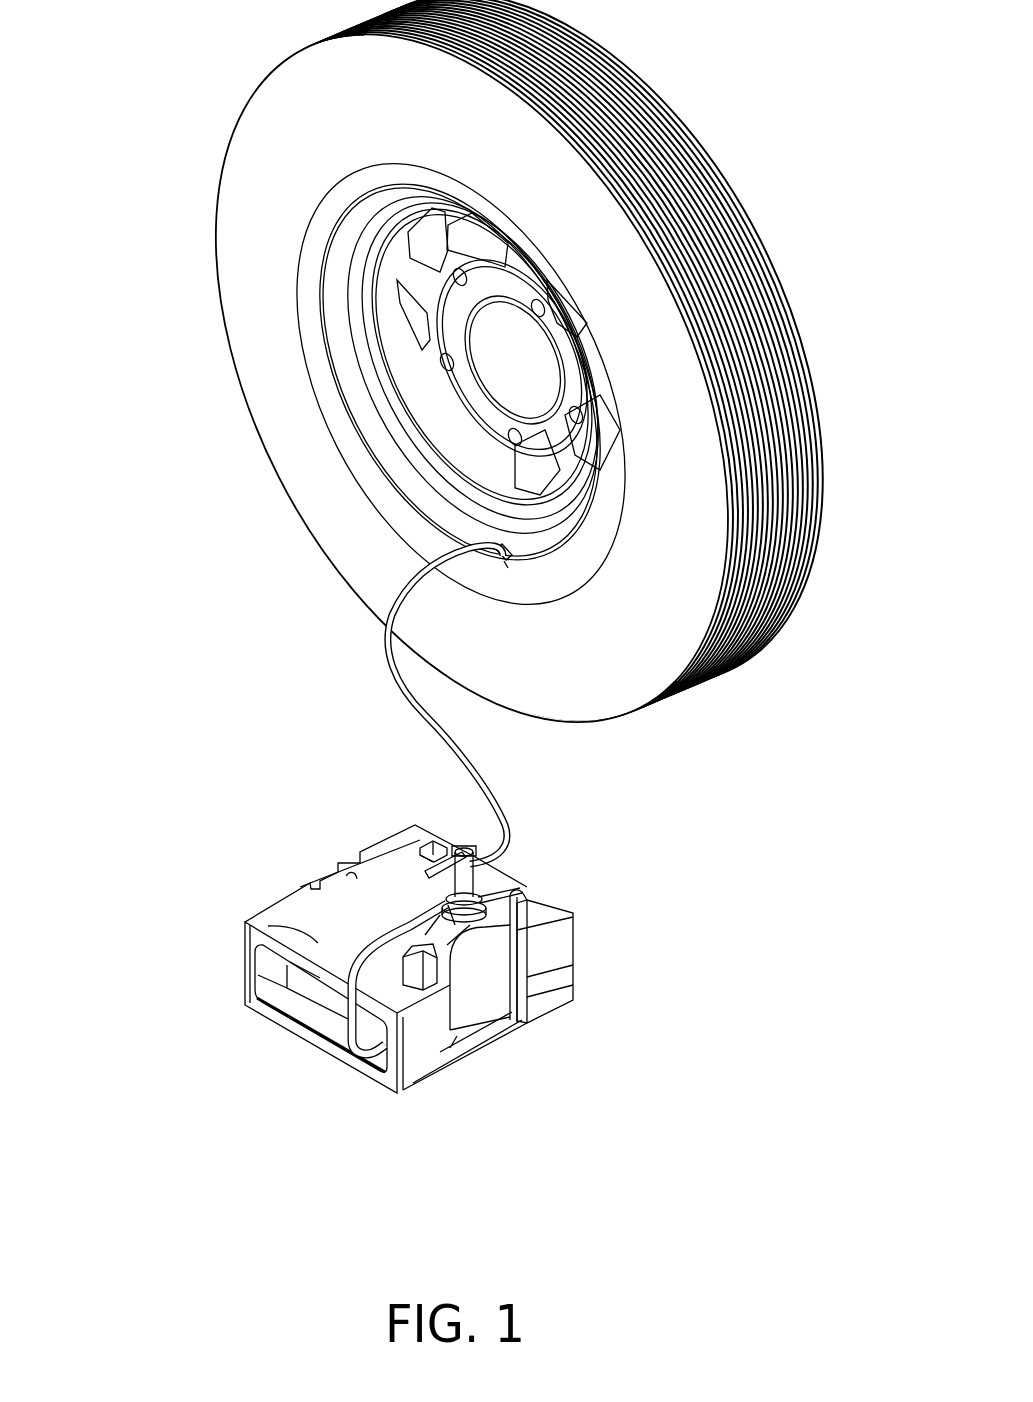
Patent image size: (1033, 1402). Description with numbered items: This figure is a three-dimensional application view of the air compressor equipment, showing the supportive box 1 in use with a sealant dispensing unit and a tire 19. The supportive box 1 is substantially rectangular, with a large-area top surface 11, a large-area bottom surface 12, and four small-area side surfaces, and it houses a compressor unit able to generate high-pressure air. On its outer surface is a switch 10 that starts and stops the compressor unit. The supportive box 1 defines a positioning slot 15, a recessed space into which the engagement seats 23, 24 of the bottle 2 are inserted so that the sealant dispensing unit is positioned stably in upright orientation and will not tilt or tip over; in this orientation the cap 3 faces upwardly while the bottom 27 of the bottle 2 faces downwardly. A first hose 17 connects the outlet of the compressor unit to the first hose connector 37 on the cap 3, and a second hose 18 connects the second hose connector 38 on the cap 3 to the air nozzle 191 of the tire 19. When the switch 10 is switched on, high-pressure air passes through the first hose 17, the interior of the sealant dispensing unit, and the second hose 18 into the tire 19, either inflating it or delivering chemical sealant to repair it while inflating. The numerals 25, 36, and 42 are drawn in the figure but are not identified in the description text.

The supportive box 1 is at (391, 954).
The bottle 2 is at (567, 983).
The cap 3 is at (537, 887).
The switch 10 is at (432, 842).
The top surface 11 is at (245, 935).
The bottom surface 12 is at (345, 1065).
The positioning slot 15 is at (457, 1053).
The first hose 17 is at (312, 1053).
The second hose 18 is at (418, 710).
The tire 19 is at (267, 376).
The engagement seat 23 is at (522, 920).
The engagement seat 24 is at (420, 1023).
The lower band 25 is at (513, 1017).
The bottom 27 is at (482, 1023).
The air nozzle 36 is at (480, 865).
The first hose connector 37 is at (285, 905).
The second hose connector 38 is at (465, 850).
The switch 42 is at (425, 872).
The air nozzle 191 is at (543, 581).